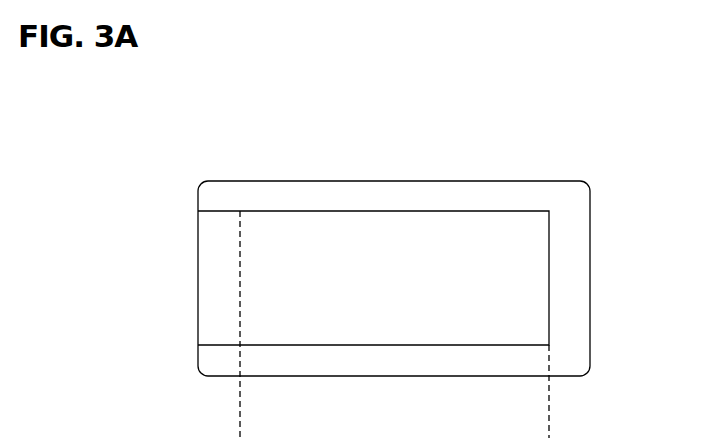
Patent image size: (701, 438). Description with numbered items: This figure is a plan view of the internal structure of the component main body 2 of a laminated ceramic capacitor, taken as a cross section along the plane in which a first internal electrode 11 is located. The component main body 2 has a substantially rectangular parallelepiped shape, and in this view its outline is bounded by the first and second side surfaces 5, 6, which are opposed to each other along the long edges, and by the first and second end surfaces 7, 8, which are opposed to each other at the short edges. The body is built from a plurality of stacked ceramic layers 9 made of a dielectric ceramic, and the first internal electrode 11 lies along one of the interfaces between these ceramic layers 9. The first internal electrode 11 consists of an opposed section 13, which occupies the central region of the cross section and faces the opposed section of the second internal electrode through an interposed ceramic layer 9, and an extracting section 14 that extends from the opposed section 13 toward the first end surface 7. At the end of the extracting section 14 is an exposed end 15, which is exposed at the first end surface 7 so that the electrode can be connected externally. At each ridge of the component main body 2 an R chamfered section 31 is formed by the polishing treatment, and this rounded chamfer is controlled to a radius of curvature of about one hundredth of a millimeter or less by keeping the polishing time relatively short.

The component main body 2 is at (107, 91).
The first side surface 5 is at (401, 181).
The second side surface 6 is at (363, 377).
The first end surface 7 is at (200, 361).
The second end surface 8 is at (590, 277).
The ceramic layer 9 is at (582, 228).
The first internal electrode 11 is at (499, 206).
The opposed section 13 is at (320, 225).
The extracting section 14 is at (220, 222).
The exposed end 15 is at (198, 264).
The R chamfered section 31 is at (198, 182).